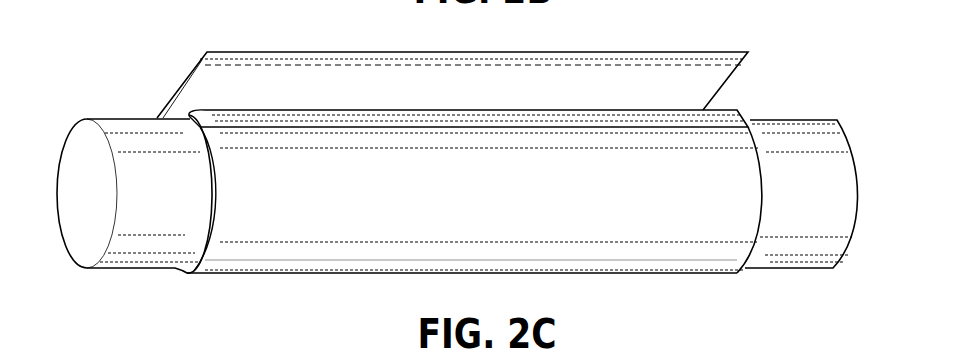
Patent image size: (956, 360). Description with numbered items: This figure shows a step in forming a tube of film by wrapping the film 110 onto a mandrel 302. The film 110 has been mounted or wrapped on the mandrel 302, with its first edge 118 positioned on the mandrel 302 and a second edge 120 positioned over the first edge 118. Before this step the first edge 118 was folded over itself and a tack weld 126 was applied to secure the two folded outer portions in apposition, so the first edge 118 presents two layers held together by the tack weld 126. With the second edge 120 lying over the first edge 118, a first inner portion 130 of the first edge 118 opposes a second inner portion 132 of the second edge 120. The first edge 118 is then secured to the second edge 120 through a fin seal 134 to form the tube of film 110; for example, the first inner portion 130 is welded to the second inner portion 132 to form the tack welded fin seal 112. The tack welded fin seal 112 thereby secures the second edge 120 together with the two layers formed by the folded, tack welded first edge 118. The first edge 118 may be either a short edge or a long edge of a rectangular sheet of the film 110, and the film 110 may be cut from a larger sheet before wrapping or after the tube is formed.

The film 110 is at (628, 248).
The first edge 118 is at (737, 110).
The second edge 120 is at (178, 88).
The tack weld 126 is at (327, 132).
The first inner portion 130 is at (204, 109).
The second inner portion 132 is at (200, 90).
The mandrel 302 is at (835, 173).
The tack welded fin seal 112 is at (321, 354).
The fin seal 134 is at (753, 354).